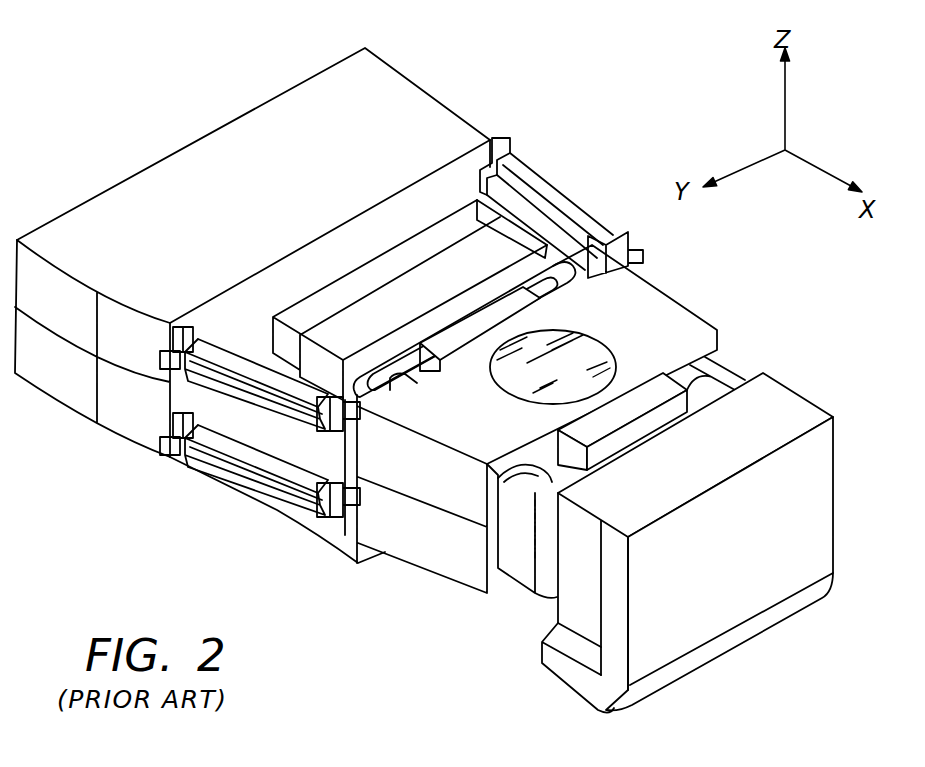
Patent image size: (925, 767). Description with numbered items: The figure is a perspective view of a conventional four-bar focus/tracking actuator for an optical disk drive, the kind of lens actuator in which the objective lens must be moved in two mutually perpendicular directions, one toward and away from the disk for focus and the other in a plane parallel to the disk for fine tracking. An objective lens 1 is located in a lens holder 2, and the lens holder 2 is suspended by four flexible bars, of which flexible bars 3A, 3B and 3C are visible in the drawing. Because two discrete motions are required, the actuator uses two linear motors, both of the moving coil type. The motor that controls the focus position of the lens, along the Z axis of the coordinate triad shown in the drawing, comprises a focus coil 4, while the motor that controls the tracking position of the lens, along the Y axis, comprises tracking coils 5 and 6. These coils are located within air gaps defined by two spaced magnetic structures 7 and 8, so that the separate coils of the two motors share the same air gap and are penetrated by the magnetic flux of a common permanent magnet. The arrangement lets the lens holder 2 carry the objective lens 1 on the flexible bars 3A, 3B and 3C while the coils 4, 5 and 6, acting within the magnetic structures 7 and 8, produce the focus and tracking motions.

The objective lens 1 is at (610, 333).
The lens holder 2 is at (408, 576).
The flexible bar 3A is at (208, 494).
The flexible bar 3B is at (236, 330).
The flexible bar 3C is at (533, 158).
The focus coil 4 is at (562, 240).
The tracking coil 5 is at (727, 379).
The tracking coil 6 is at (530, 490).
The magnetic structure 7 is at (846, 398).
The magnetic structure 8 is at (447, 180).